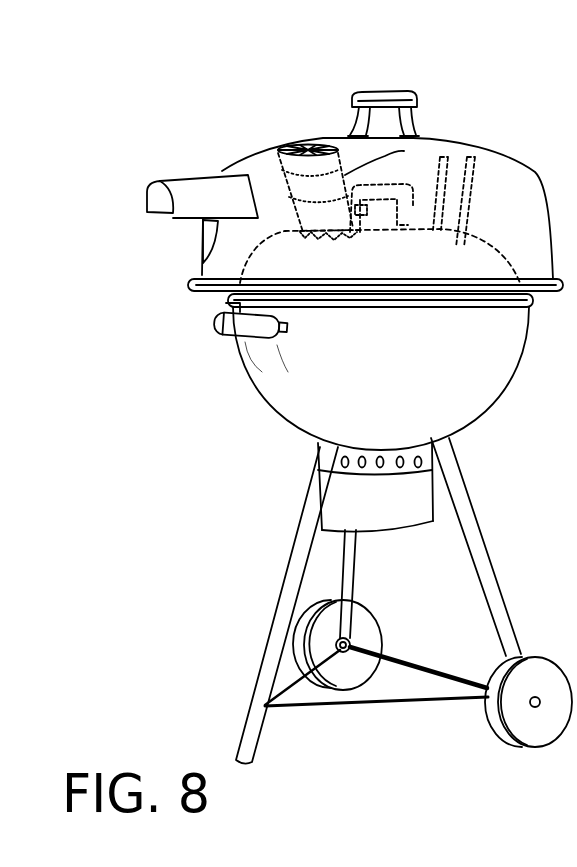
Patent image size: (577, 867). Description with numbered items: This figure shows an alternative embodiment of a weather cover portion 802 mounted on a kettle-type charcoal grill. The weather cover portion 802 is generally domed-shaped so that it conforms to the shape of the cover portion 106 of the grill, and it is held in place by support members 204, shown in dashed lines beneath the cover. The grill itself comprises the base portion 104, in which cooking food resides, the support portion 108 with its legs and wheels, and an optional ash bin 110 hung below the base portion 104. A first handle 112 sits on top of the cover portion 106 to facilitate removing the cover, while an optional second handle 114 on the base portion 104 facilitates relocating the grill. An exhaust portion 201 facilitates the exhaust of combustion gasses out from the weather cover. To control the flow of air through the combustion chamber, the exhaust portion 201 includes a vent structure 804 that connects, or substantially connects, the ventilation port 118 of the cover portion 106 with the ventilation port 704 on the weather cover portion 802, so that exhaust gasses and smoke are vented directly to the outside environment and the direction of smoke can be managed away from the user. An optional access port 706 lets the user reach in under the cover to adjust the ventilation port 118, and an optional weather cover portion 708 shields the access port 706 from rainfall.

The weather cover portion 802 is at (144, 104).
The ventilation port 704 is at (263, 138).
The exhaust portion 201 is at (306, 116).
The first handle 112 is at (404, 92).
The support members 204 is at (475, 180).
The vent structure 804 is at (390, 197).
The cover portion 106 is at (488, 252).
The weather cover portion 708 is at (153, 191).
The access port 706 is at (192, 238).
The ventilation port 118 is at (343, 248).
The second handle 114 is at (218, 321).
The base portion 104 is at (302, 405).
The support portion 108 is at (253, 543).
The ash bin 110 is at (378, 508).